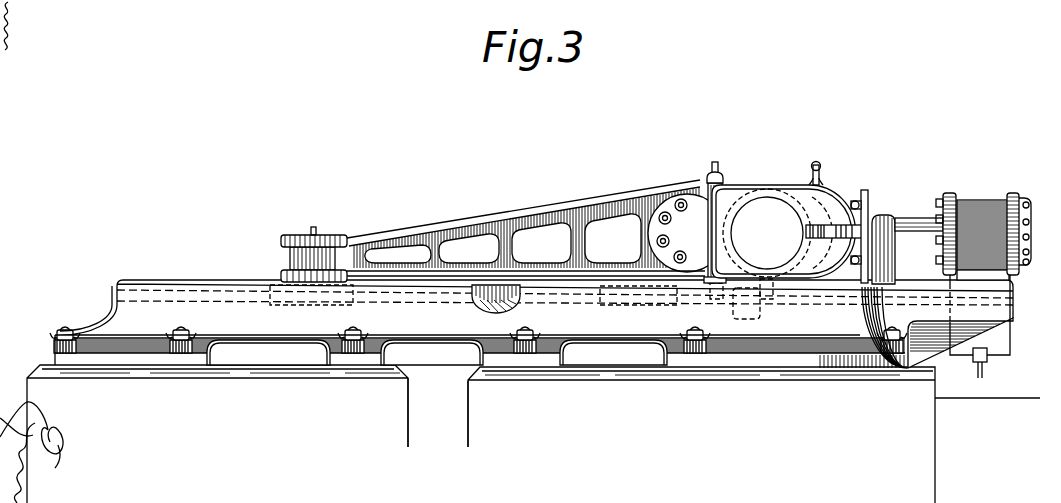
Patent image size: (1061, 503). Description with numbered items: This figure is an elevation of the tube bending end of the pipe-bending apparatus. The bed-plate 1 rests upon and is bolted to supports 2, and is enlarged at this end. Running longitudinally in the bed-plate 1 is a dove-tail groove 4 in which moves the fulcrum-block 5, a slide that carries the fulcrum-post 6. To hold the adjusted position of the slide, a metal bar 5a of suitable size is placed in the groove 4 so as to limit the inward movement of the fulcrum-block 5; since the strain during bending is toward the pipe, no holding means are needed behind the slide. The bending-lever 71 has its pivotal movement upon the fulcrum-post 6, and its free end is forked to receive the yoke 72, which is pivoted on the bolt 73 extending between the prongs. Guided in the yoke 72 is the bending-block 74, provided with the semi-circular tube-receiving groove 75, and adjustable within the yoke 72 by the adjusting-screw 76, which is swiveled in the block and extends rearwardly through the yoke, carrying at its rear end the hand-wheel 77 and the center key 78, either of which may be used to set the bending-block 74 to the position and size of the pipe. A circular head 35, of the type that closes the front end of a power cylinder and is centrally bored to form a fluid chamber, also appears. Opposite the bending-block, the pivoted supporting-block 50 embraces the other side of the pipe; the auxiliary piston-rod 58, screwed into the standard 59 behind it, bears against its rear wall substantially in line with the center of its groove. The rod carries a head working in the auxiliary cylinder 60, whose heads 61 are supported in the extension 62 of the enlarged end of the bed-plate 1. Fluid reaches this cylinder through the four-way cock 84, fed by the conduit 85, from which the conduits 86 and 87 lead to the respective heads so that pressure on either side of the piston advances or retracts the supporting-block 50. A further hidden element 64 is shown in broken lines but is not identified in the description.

The bed-plate 1 is at (257, 328).
The supports 2 is at (385, 393).
The dove-tail groove 4 is at (531, 323).
The fulcrum-block 5 is at (268, 292).
The metal bar 5a is at (485, 309).
The fulcrum-post 6 is at (307, 294).
The circular head 35 is at (687, 233).
The supporting-block 50 is at (823, 224).
The auxiliary piston-rod 58 is at (929, 222).
The standard 59 is at (867, 302).
The auxiliary cylinder 60 is at (983, 232).
The heads 61 is at (1012, 194).
The extension 62 is at (998, 312).
The hidden boss 64 is at (747, 319).
The bending-lever 71 is at (510, 224).
The yoke 72 is at (802, 186).
The bolt 73 is at (712, 186).
The bending-block 74 is at (795, 196).
The tube-receiving groove 75 is at (778, 254).
The adjusting-screw 76 is at (863, 198).
The hand-wheel 77 is at (871, 212).
The center key 78 is at (893, 218).
The four-way cock 84 is at (986, 361).
The conduit 85 is at (980, 373).
The conduit 86 is at (1013, 277).
The conduit 87 is at (950, 278).